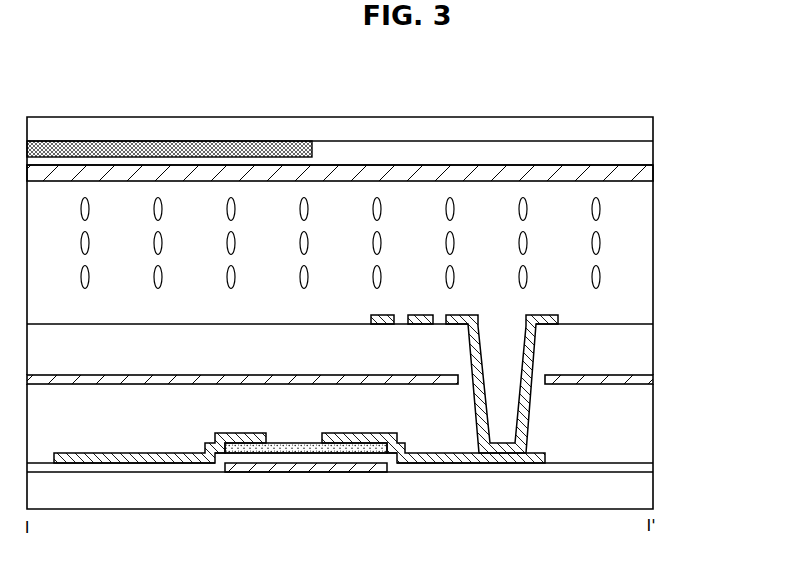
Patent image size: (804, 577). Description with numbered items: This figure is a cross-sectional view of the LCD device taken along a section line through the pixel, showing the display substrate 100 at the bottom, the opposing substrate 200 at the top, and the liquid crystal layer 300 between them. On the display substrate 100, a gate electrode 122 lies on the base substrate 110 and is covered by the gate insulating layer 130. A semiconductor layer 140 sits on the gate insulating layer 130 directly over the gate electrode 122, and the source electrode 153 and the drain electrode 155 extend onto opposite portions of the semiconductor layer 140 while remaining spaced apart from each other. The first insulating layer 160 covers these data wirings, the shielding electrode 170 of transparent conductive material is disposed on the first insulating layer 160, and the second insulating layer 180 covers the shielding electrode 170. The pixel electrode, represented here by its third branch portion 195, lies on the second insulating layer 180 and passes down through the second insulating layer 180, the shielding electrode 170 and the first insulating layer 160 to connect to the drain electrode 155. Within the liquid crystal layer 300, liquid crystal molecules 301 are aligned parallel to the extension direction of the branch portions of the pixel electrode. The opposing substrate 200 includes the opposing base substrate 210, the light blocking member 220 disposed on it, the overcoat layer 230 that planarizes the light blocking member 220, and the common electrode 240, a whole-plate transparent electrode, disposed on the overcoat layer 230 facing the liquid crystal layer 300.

The display substrate 100 is at (722, 345).
The base substrate 110 is at (640, 492).
The gate electrode 122 is at (337, 466).
The gate insulating layer 130 is at (640, 466).
The semiconductor layer 140 is at (283, 449).
The source electrode 153 is at (197, 462).
The drain electrode 155 is at (445, 456).
The first insulating layer 160 is at (640, 420).
The shielding electrode 170 is at (640, 378).
The second insulating layer 180 is at (640, 348).
The third branch portion 195 is at (377, 314).
The opposing substrate 200 is at (720, 122).
The opposing base substrate 210 is at (638, 130).
The light blocking member 220 is at (168, 150).
The overcoat layer 230 is at (638, 153).
The common electrode 240 is at (638, 173).
The liquid crystal layer 300 is at (630, 248).
The liquid crystal molecules 301 is at (523, 205).